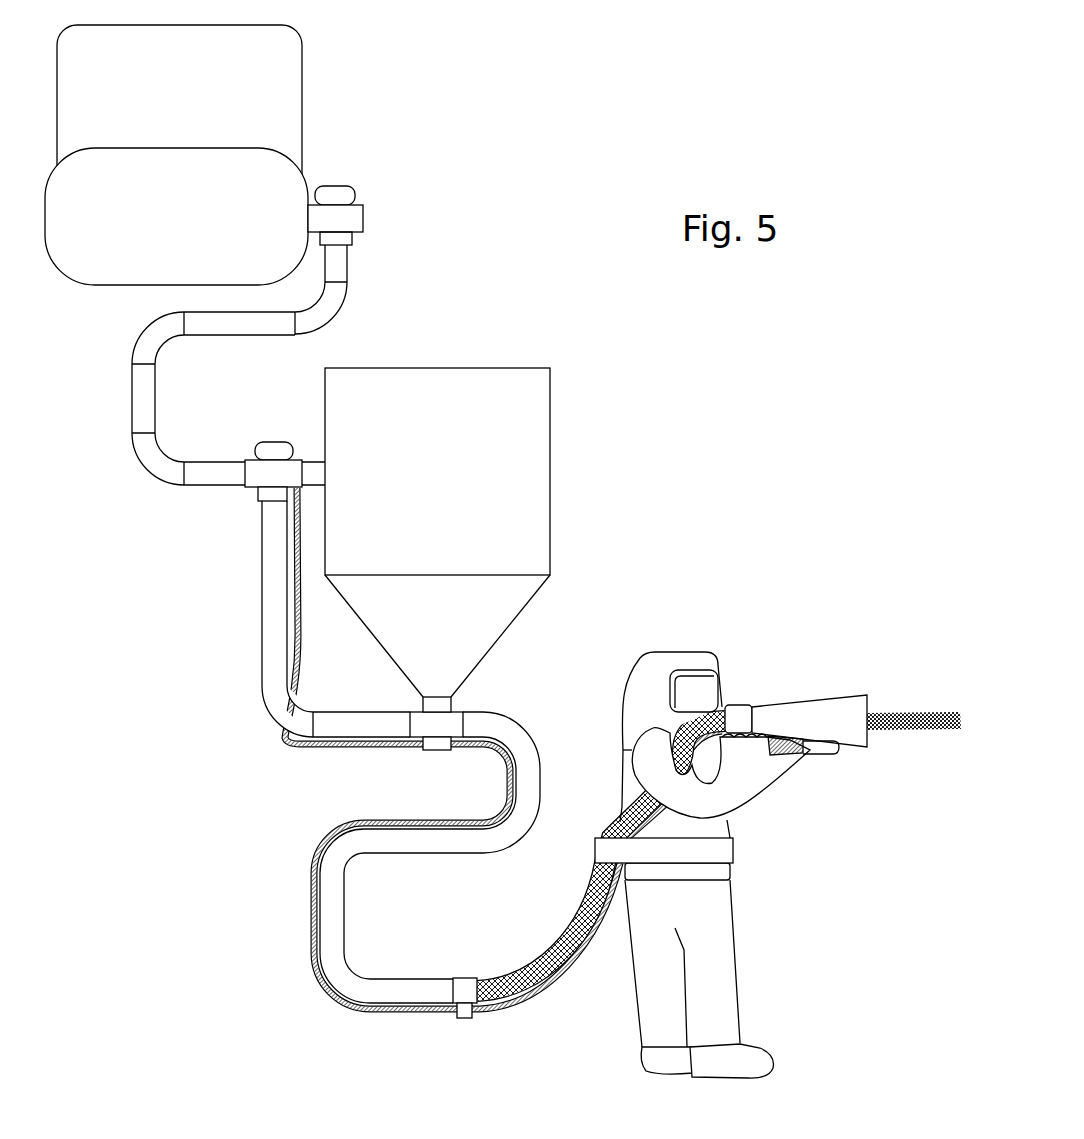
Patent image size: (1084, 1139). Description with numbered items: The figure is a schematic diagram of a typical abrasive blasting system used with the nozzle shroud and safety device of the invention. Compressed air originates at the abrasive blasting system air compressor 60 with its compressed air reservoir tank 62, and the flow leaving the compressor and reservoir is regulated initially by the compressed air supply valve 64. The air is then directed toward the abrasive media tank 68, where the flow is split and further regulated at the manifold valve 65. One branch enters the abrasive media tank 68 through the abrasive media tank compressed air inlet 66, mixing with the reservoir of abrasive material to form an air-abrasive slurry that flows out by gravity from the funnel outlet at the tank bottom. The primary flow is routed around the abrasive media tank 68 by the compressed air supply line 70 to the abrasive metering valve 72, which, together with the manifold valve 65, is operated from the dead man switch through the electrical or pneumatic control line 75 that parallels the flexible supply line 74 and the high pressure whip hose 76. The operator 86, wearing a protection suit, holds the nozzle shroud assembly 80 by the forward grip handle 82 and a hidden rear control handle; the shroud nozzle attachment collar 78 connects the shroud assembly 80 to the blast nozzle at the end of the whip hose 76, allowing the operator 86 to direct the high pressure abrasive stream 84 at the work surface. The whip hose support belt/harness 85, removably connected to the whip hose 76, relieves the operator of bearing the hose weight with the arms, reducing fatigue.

The abrasive blasting system air compressor 60 is at (303, 113).
The compressed air reservoir tank 62 is at (117, 287).
The compressed air supply valve 64 is at (365, 218).
The manifold valve 65 is at (253, 489).
The abrasive media tank compressed air inlet 66 is at (313, 461).
The abrasive media tank 68 is at (551, 456).
The compressed air supply line 70 is at (262, 643).
The abrasive metering valve 72 is at (438, 751).
The flexible supply line 74 is at (346, 950).
The electrical or pneumatic control line 75 is at (313, 920).
The high pressure supply line (whip hose) 76 is at (507, 978).
The shroud nozzle attachment collar 78 is at (727, 706).
The nozzle shroud assembly 80 is at (808, 696).
The forward grip handle 82 is at (812, 757).
The high pressure abrasive stream 84 is at (936, 740).
The operator whip hose support belt/harness 85 is at (596, 850).
The operator 86 is at (732, 821).